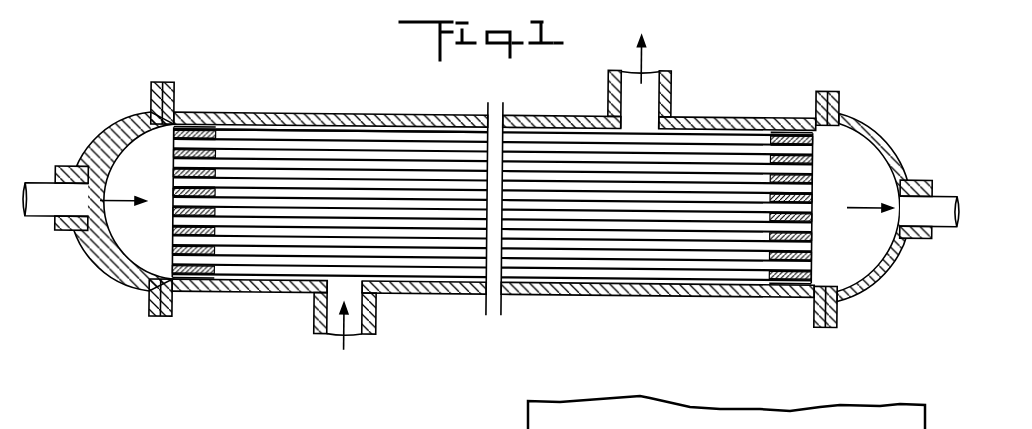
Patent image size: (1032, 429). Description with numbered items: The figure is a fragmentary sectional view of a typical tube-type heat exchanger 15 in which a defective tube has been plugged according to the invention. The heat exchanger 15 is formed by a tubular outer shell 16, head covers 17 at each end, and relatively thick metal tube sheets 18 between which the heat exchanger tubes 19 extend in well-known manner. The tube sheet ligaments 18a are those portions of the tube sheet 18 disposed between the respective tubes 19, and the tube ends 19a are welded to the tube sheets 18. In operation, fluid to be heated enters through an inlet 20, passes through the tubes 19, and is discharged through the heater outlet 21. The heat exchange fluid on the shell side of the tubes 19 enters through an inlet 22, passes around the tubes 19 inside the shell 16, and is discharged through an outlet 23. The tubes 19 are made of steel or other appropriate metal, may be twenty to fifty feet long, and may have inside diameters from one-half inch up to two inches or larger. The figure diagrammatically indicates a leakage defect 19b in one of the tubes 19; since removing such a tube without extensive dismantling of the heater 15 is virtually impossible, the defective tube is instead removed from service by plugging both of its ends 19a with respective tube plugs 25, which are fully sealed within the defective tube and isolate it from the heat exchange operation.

The tube-type heat exchanger 15 is at (278, 92).
The tubular outer shell 16 is at (337, 112).
The head covers 17 is at (95, 258).
The tube sheets 18 is at (208, 278).
The tube sheet ligaments 18a is at (175, 233).
The heat exchanger tubes 19 is at (367, 130).
The tube ends 19a is at (175, 190).
The leakage defect 19b is at (404, 129).
The inlet 20 is at (40, 185).
The heater outlet 21 is at (942, 186).
The inlet 22 is at (346, 326).
The outlet 23 is at (650, 79).
The tube plugs 25 is at (187, 130).